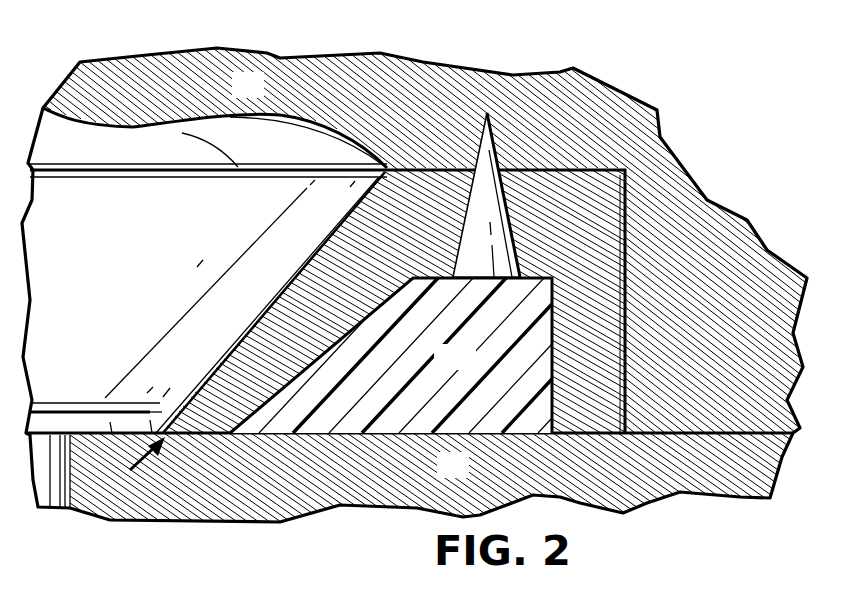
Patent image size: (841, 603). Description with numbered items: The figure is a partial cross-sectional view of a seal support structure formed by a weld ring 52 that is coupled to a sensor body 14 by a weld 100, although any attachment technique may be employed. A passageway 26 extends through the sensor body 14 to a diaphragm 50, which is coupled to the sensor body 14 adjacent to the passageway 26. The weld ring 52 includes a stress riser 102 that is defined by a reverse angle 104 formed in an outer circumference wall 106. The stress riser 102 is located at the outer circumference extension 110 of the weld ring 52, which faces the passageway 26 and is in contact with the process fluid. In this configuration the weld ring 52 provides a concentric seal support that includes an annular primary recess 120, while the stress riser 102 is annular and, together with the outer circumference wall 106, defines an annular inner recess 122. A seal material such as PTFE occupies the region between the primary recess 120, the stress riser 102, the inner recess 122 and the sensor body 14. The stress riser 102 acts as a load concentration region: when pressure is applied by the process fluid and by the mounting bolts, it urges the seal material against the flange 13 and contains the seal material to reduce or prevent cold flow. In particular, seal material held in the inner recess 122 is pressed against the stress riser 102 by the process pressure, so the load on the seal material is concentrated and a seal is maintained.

The flange 13 is at (441, 477).
The sensor body 14 is at (259, 96).
The passageway 26 is at (85, 157).
The diaphragm 50 is at (213, 135).
The weld ring 52 is at (420, 200).
The weld 100 is at (490, 172).
The stress riser 102 is at (258, 412).
The reverse angle 104 is at (145, 412).
The outer circumference wall 106 is at (196, 424).
The outer circumference extension 110 is at (350, 300).
The annular primary recess 120 is at (472, 367).
The annular inner recess 122 is at (207, 427).